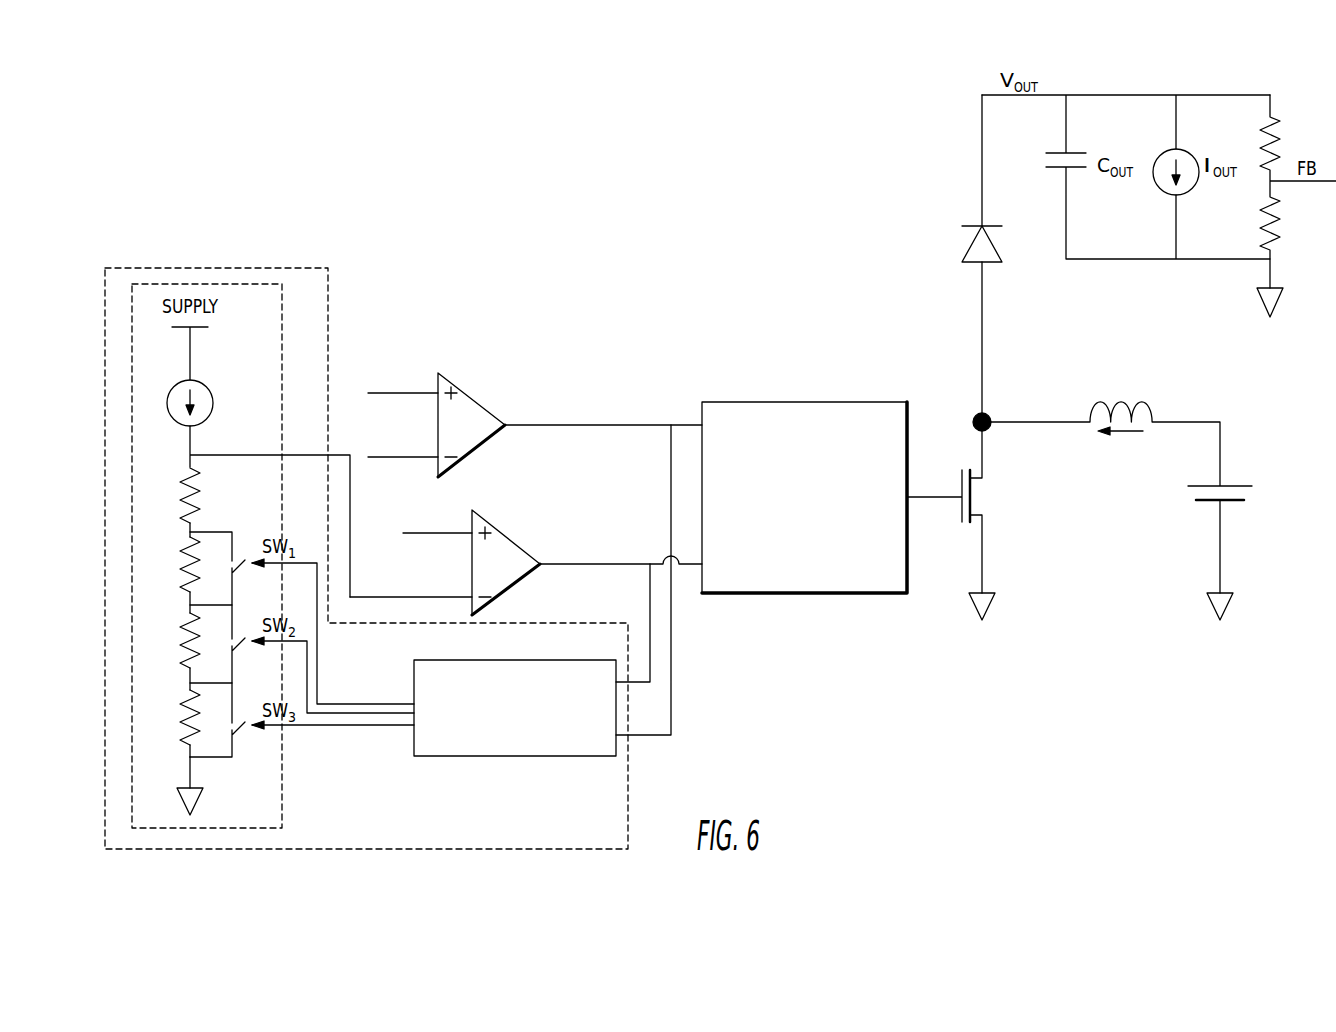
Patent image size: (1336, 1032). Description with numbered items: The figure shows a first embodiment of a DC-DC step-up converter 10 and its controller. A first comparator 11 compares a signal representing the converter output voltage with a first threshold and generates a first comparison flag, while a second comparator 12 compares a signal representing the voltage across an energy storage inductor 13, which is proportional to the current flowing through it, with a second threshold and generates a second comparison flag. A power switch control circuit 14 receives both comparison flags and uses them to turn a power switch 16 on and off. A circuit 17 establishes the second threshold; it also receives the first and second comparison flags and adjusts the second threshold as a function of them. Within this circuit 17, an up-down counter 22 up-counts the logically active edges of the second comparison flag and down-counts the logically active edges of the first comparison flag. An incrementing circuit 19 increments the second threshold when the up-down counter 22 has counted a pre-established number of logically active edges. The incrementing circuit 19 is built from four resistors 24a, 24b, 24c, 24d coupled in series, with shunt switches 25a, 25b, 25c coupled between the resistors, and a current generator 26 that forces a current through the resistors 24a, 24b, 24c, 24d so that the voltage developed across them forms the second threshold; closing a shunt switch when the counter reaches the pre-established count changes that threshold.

The DC-DC step-up converter 10 is at (590, 232).
The first comparator 11 is at (438, 373).
The second comparator 12 is at (472, 518).
The energy storage inductor 13 is at (1153, 410).
The power switch control circuit 14 is at (702, 402).
The power switch 16 is at (962, 515).
The circuit to establish the second threshold 17 is at (207, 267).
The incrementing circuit 19 is at (130, 755).
The up-down counter 22 is at (433, 756).
The resistor 24a is at (178, 493).
The resistor 24b is at (178, 582).
The resistor 24c is at (178, 657).
The resistor 24d is at (178, 747).
The shunt switch 25a is at (232, 548).
The shunt switch 25b is at (232, 622).
The shunt switch 25c is at (232, 708).
The current generator 26 is at (165, 402).